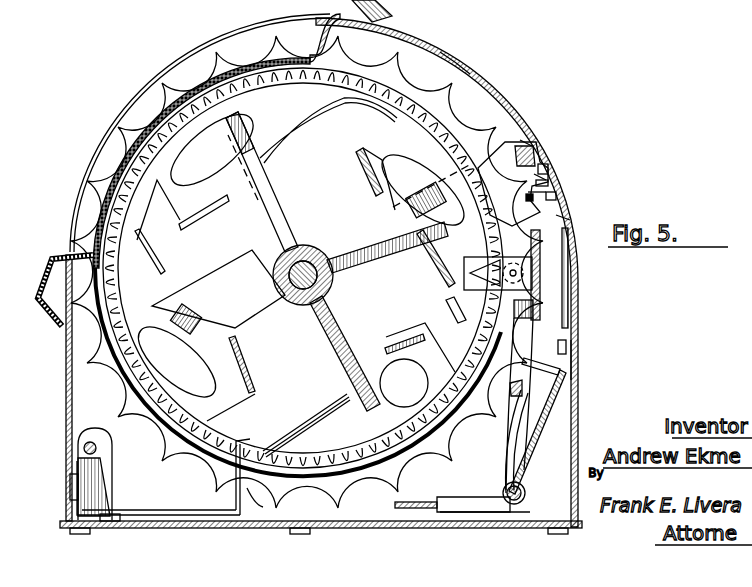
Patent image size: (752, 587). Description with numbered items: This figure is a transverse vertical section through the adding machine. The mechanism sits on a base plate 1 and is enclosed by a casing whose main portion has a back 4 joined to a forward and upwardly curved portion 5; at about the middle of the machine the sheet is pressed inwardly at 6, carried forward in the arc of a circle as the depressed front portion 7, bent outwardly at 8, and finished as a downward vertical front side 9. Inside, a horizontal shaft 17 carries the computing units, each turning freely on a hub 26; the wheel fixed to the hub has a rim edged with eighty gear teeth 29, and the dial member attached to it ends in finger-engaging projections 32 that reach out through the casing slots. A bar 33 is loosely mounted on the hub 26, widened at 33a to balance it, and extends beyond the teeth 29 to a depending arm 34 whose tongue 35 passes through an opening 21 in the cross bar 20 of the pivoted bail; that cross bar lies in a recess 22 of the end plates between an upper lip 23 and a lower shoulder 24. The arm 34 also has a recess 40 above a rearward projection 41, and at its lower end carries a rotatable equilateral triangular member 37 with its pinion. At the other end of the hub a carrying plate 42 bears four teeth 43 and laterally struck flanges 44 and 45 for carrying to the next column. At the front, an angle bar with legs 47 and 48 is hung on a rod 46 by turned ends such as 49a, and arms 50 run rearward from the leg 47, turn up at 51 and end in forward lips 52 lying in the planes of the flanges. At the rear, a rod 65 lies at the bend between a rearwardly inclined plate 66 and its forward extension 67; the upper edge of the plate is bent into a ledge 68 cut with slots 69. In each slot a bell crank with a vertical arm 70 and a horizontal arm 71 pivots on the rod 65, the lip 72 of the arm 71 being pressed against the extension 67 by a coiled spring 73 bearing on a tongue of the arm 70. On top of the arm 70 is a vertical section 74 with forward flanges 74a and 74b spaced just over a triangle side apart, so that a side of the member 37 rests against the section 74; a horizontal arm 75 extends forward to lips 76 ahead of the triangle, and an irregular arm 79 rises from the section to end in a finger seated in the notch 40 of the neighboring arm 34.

The base plate 1 is at (220, 529).
The back 4 is at (576, 357).
The forward and upwardly curved portion 5 is at (503, 106).
The inwardly pressed portion 6 is at (340, 40).
The depressed front curved portion 7 is at (170, 108).
The outwardly bent portion 8 is at (67, 257).
The vertical front side 9 is at (70, 384).
The horizontal shaft 17 is at (305, 307).
The cross bar 20 is at (535, 158).
The openings 21 is at (548, 168).
The recess 22 is at (548, 183).
The upper lip 23 is at (526, 143).
The lower shoulder 24 is at (556, 197).
The hub 26 is at (307, 247).
The gear teeth 29 is at (383, 83).
The projections 32 is at (449, 63).
The bar 33 is at (387, 252).
The widened portion 33a is at (213, 293).
The depending arm 34 is at (503, 220).
The tongue 35 is at (546, 177).
The triangular shaped member 37 is at (540, 287).
The recess 40 is at (546, 196).
The rearwardly extending projection 41 is at (564, 217).
The carrying plate 42 is at (240, 97).
The teeth 43 is at (267, 67).
The flanges 44 is at (300, 130).
The flanges 45 is at (355, 163).
The horizontal rod 46 is at (84, 447).
The leg 47 is at (110, 516).
The leg 48 is at (72, 481).
The turned end 49a is at (112, 481).
The arms 50 is at (163, 512).
The upwardly turned portion 51 is at (253, 504).
The forwardly turned lips 52 is at (240, 439).
The second horizontal rod 65 is at (526, 499).
The sheet metal plate 66 is at (553, 427).
The horizontal forward extension 67 is at (413, 526).
The ledge 68 is at (563, 371).
The slots 69 is at (566, 347).
The vertical arm 70 is at (529, 409).
The horizontal arm 71 is at (476, 511).
The lip 72 is at (443, 496).
The spring 73 is at (506, 449).
The vertical section 74 is at (568, 290).
The flange 74a is at (563, 233).
The flange 74b is at (533, 317).
The horizontal arm 75 is at (456, 312).
The lips 76 is at (464, 287).
The irregularly shaped arm 79 is at (526, 198).